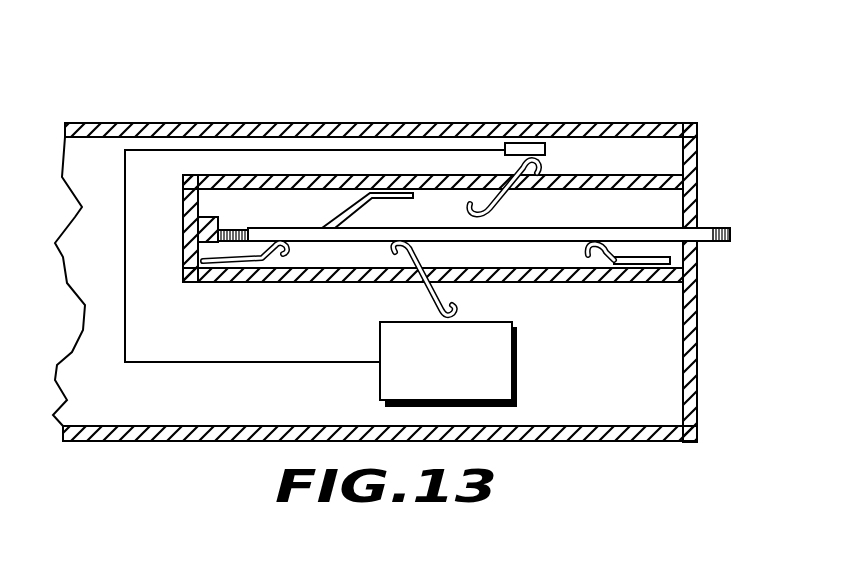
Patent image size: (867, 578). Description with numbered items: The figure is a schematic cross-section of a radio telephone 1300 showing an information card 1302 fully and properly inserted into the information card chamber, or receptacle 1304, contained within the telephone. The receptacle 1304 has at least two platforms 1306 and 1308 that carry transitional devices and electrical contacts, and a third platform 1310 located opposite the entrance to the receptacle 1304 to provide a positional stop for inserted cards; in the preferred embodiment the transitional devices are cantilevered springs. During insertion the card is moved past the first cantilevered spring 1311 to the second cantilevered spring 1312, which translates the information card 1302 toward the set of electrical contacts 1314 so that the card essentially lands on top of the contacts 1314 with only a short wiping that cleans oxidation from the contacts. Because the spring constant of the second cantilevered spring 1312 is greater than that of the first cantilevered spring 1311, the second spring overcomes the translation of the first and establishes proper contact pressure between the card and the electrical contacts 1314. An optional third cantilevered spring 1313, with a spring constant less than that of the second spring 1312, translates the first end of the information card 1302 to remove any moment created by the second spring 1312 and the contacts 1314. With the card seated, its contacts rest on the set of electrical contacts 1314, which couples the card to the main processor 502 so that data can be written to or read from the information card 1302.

The radio telephone 1300 is at (645, 95).
The information card 1302 is at (712, 227).
The information card chamber (receptacle) 1304 is at (675, 208).
The first platform 1306 is at (640, 192).
The second platform 1308 is at (675, 263).
The third platform 1310 is at (212, 185).
The first cantilevered spring 1311 is at (625, 262).
The second cantilevered spring 1312 is at (360, 198).
The third cantilevered spring 1313 is at (276, 258).
The set of electrical contacts 1314 is at (425, 295).
The main processor 502 is at (512, 405).